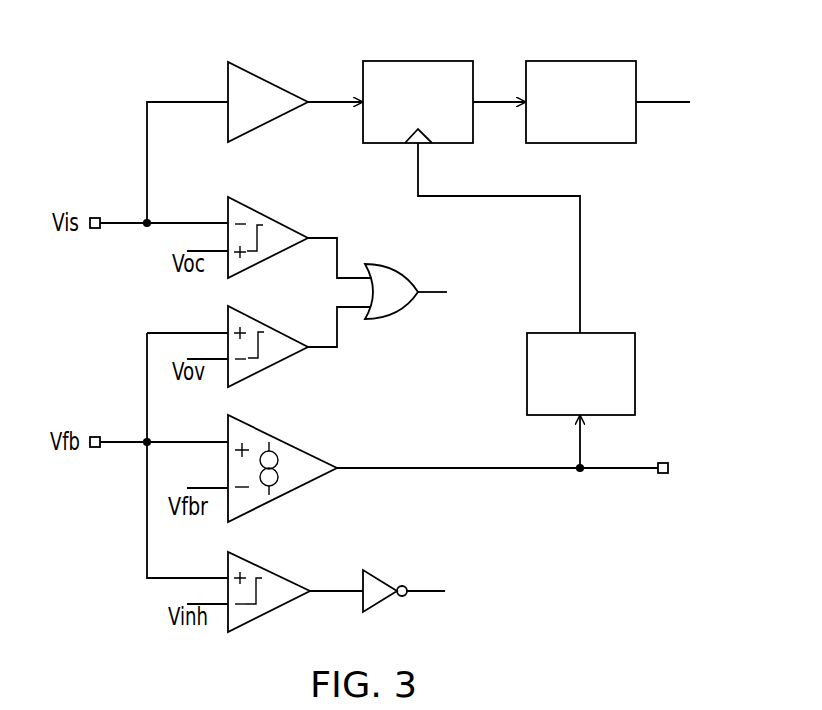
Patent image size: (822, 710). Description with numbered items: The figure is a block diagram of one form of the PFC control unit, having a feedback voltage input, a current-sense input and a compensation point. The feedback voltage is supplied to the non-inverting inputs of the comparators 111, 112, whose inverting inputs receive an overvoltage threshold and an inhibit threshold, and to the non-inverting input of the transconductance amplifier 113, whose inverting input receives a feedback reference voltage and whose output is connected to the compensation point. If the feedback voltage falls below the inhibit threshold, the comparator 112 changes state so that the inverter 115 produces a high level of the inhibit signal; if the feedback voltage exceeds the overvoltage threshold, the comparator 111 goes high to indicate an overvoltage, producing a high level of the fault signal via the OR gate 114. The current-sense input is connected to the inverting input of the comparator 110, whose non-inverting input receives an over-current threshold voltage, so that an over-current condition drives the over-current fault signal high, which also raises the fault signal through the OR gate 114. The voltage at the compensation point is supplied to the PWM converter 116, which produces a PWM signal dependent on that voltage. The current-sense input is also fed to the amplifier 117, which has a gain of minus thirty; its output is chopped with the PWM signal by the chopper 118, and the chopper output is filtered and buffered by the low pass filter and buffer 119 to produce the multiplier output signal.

The comparator 110 is at (276, 230).
The comparator 111 is at (277, 338).
The comparator 112 is at (275, 584).
The transconductance amplifier 113 is at (282, 447).
The OR gate 114 is at (400, 304).
The inverter 115 is at (368, 573).
The PWM converter 116 is at (540, 352).
The amplifier 117 is at (276, 93).
The chopper 118 is at (383, 134).
The low pass filter and buffer 119 is at (602, 134).